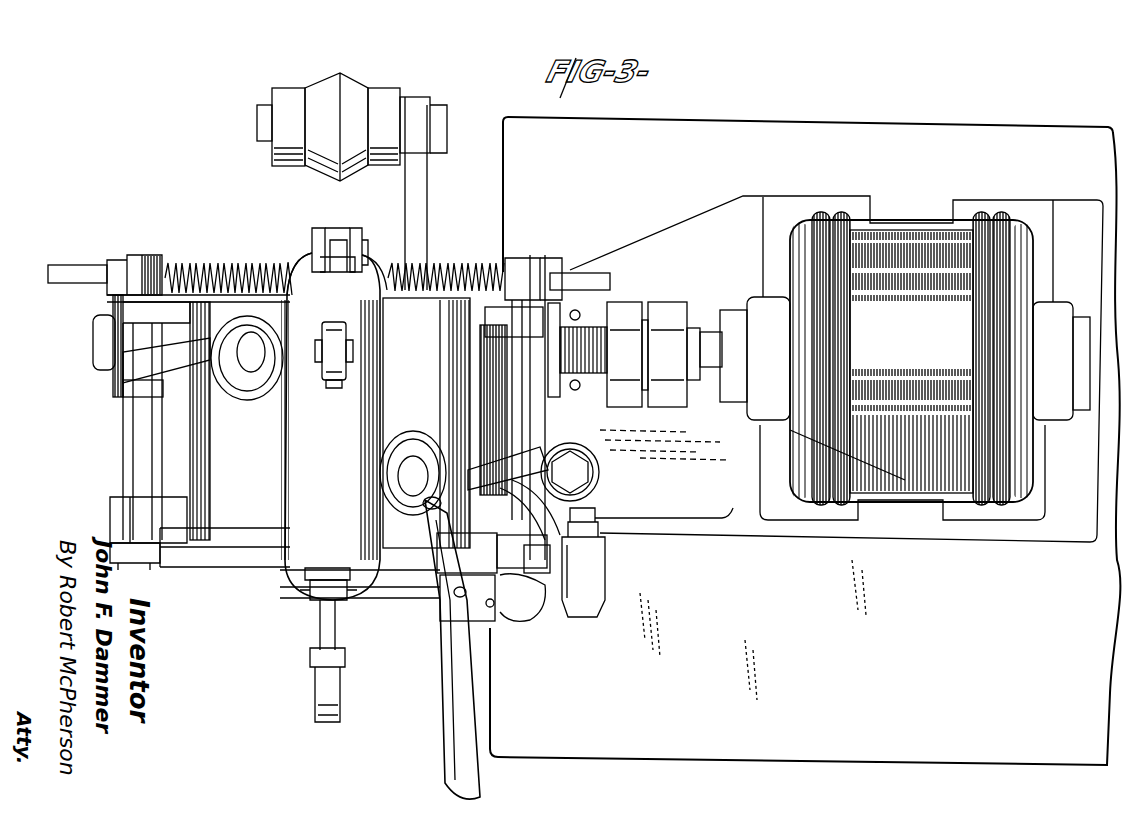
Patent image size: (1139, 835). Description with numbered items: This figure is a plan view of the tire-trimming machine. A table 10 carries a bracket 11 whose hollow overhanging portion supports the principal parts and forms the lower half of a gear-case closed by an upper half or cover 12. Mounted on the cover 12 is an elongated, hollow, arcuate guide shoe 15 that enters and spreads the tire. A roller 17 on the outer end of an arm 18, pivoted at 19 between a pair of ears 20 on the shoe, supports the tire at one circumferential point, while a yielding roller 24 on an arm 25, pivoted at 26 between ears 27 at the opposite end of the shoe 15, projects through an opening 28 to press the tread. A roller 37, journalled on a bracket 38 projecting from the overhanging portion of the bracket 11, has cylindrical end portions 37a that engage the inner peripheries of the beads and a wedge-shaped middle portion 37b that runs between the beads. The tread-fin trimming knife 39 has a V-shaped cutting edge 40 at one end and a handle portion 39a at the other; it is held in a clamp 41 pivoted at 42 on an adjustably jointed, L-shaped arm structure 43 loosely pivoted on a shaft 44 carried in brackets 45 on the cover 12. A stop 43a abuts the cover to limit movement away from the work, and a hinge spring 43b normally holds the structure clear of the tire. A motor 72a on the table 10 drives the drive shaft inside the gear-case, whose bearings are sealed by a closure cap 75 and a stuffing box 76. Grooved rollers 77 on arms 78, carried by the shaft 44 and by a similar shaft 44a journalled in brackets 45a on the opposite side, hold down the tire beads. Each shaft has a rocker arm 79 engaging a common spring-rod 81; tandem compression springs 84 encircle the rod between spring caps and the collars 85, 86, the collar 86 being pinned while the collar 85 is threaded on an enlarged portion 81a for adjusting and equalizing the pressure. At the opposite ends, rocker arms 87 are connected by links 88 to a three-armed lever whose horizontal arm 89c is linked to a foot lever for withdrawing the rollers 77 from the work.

The table 10 is at (805, 441).
The bracket 11 is at (664, 474).
The gear-case cover 12 is at (426, 423).
The guide shoe 15 is at (330, 426).
The roller 17 is at (335, 722).
The arm 18 is at (320, 630).
The pivot 19 is at (300, 594).
The ears 20 is at (300, 575).
The roller 24 is at (334, 332).
The arm 25 is at (340, 243).
The pivot 26 is at (366, 250).
The ears 27 is at (317, 232).
The opening 28 is at (338, 390).
The roller 37 is at (303, 170).
The cylindrical end portions 37a is at (290, 96).
The wedge-shaped middle portion 37b is at (345, 82).
The bracket 38 is at (418, 180).
The tread-fin trimming knife 39 is at (437, 548).
The handle portion 39a is at (447, 698).
The V-shaped cutting edge 40 is at (423, 500).
The clamp 41 is at (470, 612).
The pivot 42 is at (492, 607).
The arm structure 43 is at (570, 578).
The stop 43a is at (505, 490).
The hinge spring 43b is at (584, 462).
The shaft 44 is at (522, 407).
The shaft 44a is at (137, 430).
The brackets 45 is at (534, 270).
The brackets 45a is at (125, 310).
The motor 72a is at (928, 232).
The external closure cap 75 is at (93, 340).
The stuffing box 76 is at (565, 322).
The roller 77 is at (238, 375).
The arm 78 is at (130, 395).
The rocker arm 79 is at (125, 262).
The spring-rod 81 is at (595, 276).
The enlarged portion 81a is at (290, 262).
The compression springs 84 is at (198, 262).
The collar 85 is at (303, 262).
The collar 86 is at (385, 264).
The rocker arms 87 is at (128, 562).
The links 88 is at (185, 567).
The third arm 89c is at (416, 598).